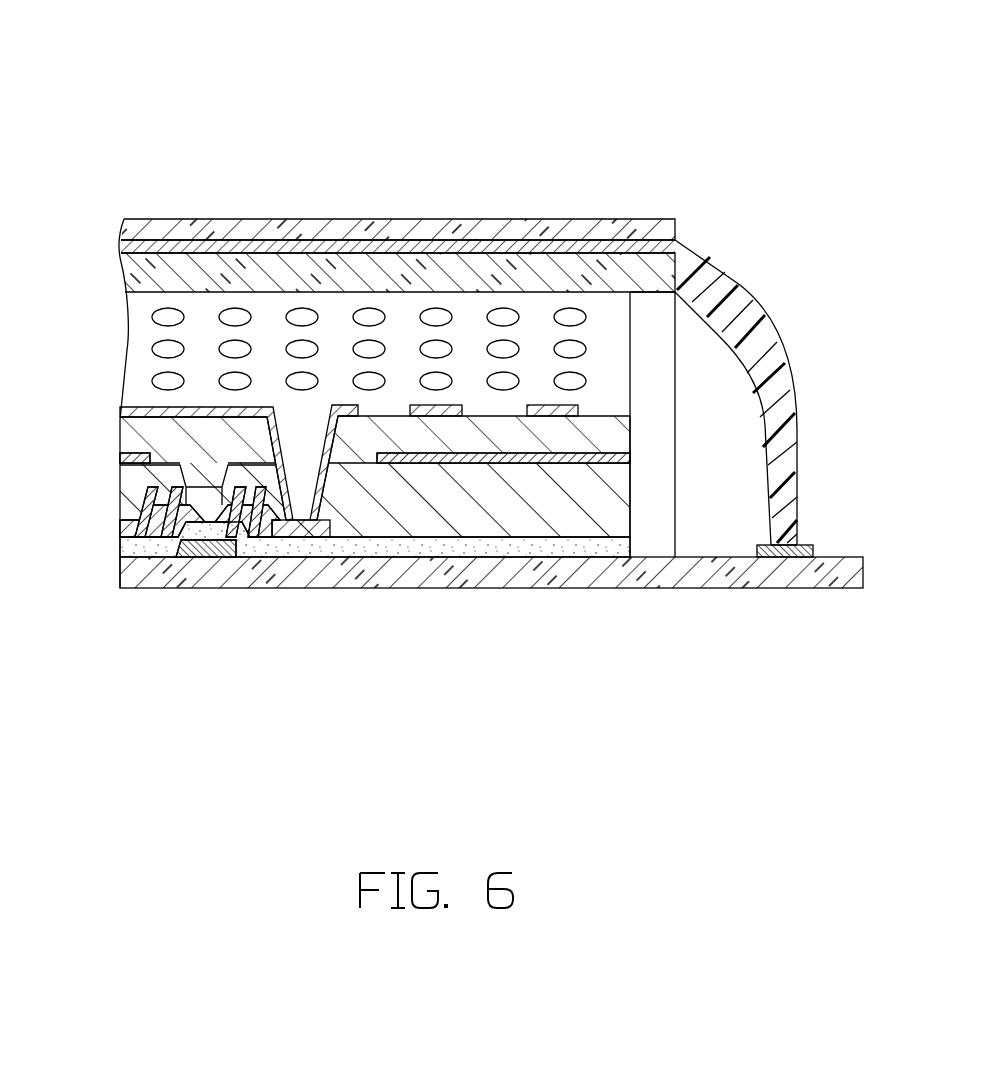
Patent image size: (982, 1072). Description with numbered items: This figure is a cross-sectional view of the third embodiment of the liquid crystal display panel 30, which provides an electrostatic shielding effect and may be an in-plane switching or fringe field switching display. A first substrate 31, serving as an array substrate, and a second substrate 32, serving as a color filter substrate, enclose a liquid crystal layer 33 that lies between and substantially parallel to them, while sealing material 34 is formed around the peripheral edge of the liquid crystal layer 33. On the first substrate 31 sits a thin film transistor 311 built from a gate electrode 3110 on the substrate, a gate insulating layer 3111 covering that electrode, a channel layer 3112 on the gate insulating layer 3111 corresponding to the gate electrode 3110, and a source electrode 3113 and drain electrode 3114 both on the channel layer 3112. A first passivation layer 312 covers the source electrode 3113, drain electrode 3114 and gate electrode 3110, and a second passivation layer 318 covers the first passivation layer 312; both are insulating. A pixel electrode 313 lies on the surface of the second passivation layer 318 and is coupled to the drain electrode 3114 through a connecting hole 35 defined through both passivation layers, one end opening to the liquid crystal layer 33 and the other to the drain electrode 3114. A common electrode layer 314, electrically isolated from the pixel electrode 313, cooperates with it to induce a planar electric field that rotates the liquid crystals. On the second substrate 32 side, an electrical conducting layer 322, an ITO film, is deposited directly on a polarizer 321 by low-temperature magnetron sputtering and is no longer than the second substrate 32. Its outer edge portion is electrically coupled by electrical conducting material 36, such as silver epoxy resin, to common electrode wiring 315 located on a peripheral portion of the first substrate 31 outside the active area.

The liquid crystal display panel 30 is at (451, 80).
The first substrate 31 is at (680, 572).
The thin film transistor 311 is at (228, 532).
The gate electrode 3110 is at (197, 558).
The gate insulating layer 3111 is at (127, 547).
The channel layer 3112 is at (140, 587).
The source electrode 3113 is at (132, 527).
The drain electrode 3114 is at (316, 452).
The first passivation layer 312 is at (137, 483).
The pixel electrode 313 is at (138, 410).
The common electrode layer 314 is at (553, 466).
The common electrode wiring 315 is at (803, 543).
The second passivation layer 318 is at (150, 434).
The second substrate 32 is at (133, 273).
The polarizer 321 is at (168, 224).
The electrical conducting layer 322 is at (126, 250).
The liquid crystal layer 33 is at (108, 297).
The sealing material 34 is at (660, 462).
The connecting hole 35 is at (335, 463).
The electrical conducting material 36 is at (748, 320).